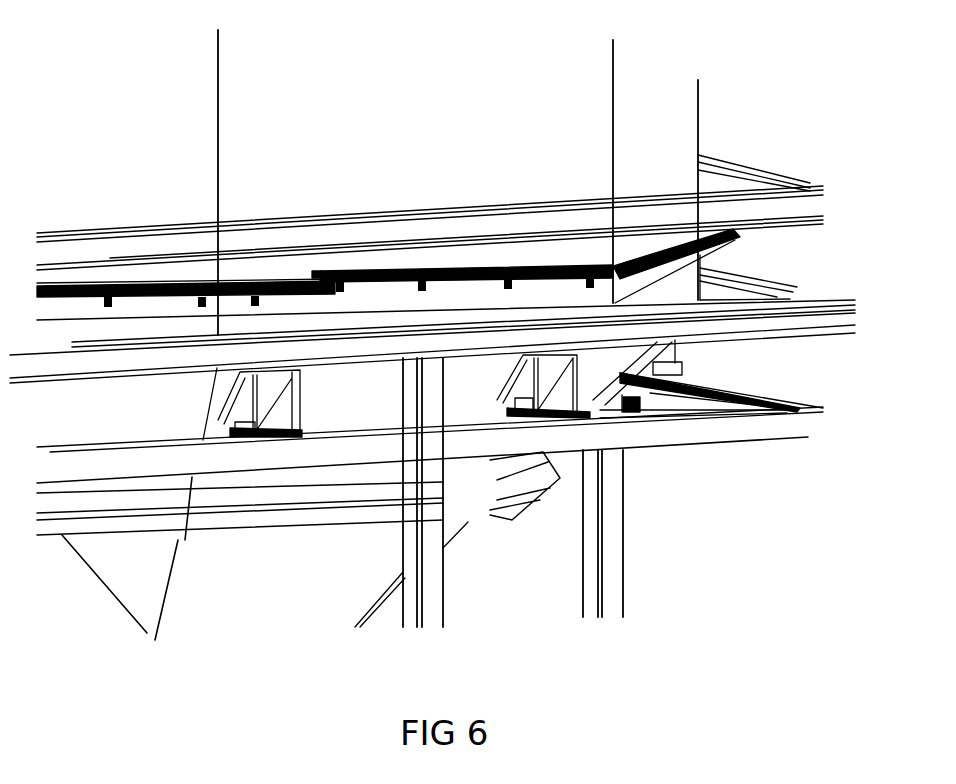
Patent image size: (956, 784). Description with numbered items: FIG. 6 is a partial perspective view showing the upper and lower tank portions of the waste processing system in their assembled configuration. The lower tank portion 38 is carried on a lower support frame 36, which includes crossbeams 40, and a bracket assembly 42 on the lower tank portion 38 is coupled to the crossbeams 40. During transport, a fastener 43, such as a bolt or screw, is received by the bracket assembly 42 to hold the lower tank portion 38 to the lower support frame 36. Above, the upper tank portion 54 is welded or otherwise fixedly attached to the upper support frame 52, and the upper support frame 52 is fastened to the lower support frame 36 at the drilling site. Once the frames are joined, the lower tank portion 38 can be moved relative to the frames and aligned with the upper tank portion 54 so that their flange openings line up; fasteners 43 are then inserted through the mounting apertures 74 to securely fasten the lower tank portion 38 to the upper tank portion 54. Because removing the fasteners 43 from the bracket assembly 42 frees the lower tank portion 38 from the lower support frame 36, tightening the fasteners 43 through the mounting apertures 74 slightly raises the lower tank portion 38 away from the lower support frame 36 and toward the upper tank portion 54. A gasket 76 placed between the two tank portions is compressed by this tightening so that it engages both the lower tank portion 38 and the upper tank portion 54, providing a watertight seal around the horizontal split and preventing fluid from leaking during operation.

The lower support frame 36 is at (432, 580).
The lower tank portion 38 is at (353, 410).
The crossbeams 40 is at (460, 442).
The bracket assembly 42 is at (257, 440).
The fastener 43 is at (312, 274).
The upper support frame 52 is at (797, 207).
The upper tank portion 54 is at (683, 125).
The mounting apertures 74 is at (507, 262).
The gasket 76 is at (722, 238).